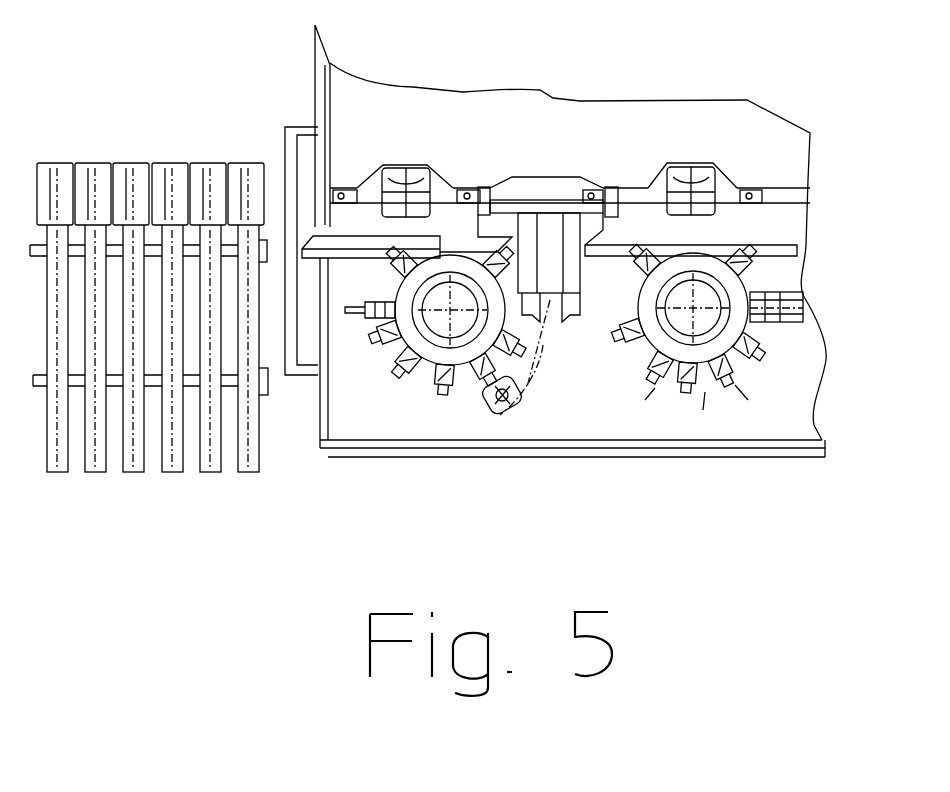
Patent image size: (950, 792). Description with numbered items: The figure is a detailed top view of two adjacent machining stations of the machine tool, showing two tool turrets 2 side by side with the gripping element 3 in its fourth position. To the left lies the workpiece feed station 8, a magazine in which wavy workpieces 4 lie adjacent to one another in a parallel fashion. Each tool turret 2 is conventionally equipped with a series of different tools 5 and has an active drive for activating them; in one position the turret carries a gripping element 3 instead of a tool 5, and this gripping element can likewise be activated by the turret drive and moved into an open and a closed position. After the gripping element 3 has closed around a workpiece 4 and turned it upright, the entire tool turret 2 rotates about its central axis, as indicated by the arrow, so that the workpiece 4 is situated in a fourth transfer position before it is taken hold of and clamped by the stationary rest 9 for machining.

The tool turret 2 is at (466, 258).
The gripping element 3 is at (504, 405).
The workpiece 4 is at (126, 158).
The tools 5 is at (705, 387).
The workpiece feed station 8 is at (273, 422).
The stationary rest 9 is at (575, 322).